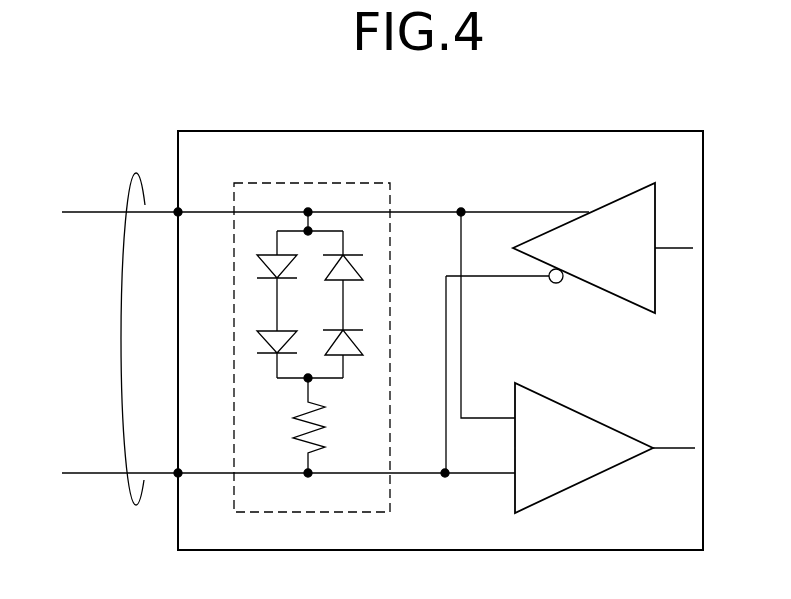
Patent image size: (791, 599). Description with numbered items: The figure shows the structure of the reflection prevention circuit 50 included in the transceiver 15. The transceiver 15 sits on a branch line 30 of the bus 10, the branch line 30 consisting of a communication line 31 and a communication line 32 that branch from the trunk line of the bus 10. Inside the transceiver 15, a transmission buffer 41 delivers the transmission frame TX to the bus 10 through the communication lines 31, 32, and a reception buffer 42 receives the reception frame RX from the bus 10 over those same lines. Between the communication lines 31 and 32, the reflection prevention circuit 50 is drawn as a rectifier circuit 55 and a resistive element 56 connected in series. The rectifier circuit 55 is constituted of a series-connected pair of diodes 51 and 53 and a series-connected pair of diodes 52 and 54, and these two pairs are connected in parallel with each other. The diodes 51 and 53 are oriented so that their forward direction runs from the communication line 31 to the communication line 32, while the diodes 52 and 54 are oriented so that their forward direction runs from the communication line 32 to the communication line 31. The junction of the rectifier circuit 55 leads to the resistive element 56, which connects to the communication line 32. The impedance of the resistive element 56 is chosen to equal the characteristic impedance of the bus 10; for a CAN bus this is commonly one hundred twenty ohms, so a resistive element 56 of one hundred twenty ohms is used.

The transceiver 15 is at (438, 131).
The branch line 30 is at (137, 505).
The bus 10 is at (136, 385).
The communication line 31 is at (82, 212).
The communication line 32 is at (77, 473).
The transmission buffer 41 is at (610, 202).
The reception buffer 42 is at (553, 397).
The reflection prevention circuit 50 is at (311, 330).
The diode 51 is at (263, 265).
The diode 52 is at (355, 265).
The diode 53 is at (263, 342).
The diode 54 is at (355, 342).
The rectifier circuit 55 is at (343, 378).
The resistive element 56 is at (297, 415).